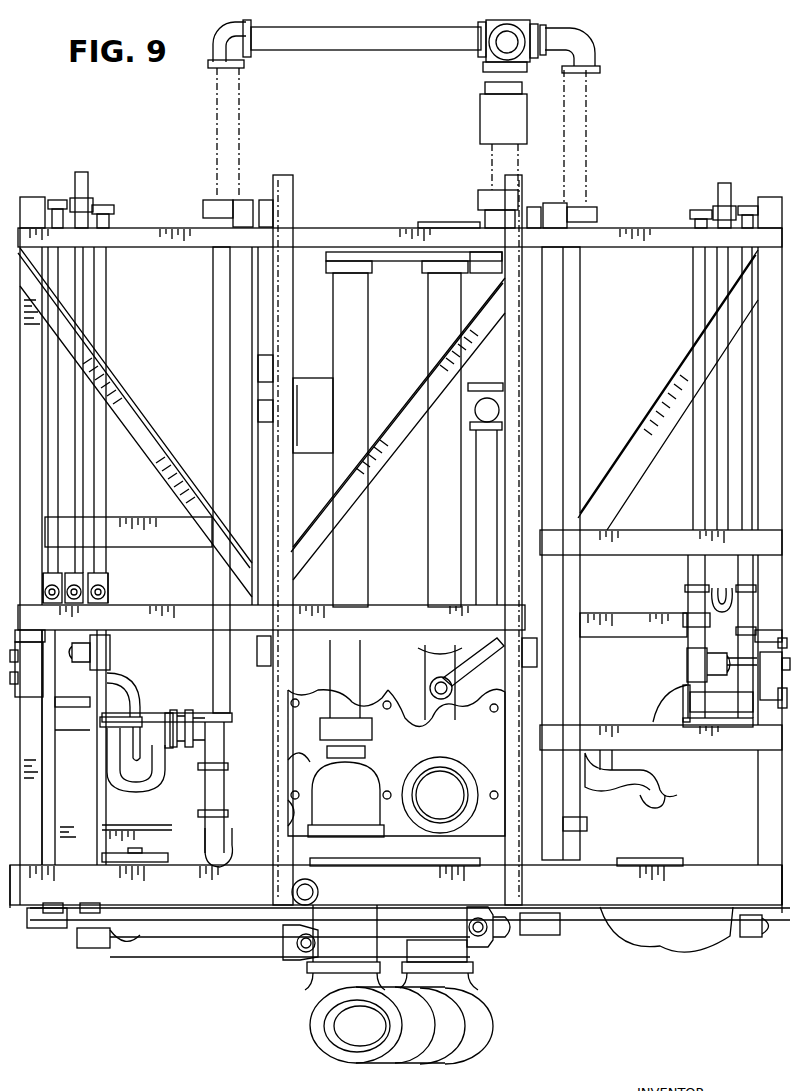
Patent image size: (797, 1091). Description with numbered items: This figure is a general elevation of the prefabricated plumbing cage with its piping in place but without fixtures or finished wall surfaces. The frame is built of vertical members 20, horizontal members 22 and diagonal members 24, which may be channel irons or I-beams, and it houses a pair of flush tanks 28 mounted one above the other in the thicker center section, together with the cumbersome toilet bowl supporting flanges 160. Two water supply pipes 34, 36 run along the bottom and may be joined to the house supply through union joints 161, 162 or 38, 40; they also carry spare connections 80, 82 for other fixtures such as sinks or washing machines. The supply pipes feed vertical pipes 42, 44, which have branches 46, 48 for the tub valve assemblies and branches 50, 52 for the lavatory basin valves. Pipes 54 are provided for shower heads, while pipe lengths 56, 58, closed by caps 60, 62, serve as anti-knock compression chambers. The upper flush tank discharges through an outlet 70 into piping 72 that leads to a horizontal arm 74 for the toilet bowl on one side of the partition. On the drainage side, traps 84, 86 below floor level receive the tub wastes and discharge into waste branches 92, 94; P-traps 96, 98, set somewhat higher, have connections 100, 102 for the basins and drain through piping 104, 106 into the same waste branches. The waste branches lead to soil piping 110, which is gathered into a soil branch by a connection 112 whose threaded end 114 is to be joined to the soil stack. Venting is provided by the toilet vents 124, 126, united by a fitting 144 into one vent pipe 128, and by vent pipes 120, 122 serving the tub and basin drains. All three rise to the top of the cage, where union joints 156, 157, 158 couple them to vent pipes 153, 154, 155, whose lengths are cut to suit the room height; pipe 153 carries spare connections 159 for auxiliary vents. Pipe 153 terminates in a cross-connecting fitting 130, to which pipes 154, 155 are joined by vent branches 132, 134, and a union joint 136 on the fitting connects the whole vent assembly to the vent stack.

The vertical member 20 is at (30, 197).
The horizontal member 22 is at (268, 198).
The diagonal member 24 is at (162, 452).
The flush tank 28 is at (310, 444).
The water supply pipe 34 is at (176, 934).
The water supply pipe 36 is at (210, 925).
The union joint 38 is at (700, 956).
The union joint 40 is at (758, 942).
The vertical pipe 42 is at (95, 780).
The vertical pipe 44 is at (52, 760).
The branch 46 is at (106, 590).
The branch 48 is at (60, 604).
The branch 50 is at (27, 662).
The branch 52 is at (20, 630).
The shower pipe 54 is at (88, 183).
The pipe length 56 is at (106, 457).
The pipe length 58 is at (48, 438).
The cap 60 is at (105, 207).
The cap 62 is at (57, 200).
The outlet 70 is at (470, 414).
The piping 72 is at (474, 480).
The horizontal arm 74 is at (432, 683).
The spare connection 80 is at (70, 950).
The spare connection 82 is at (40, 926).
The trap 84 is at (152, 856).
The trap 86 is at (645, 858).
The waste branch 92 is at (205, 835).
The waste branch 94 is at (588, 829).
The P-trap 96 is at (130, 786).
The P-trap 98 is at (642, 798).
The connection 100 is at (78, 700).
The connection 102 is at (730, 712).
The piping 104 is at (205, 778).
The piping 106 is at (590, 782).
The soil piping 110 is at (388, 858).
The connection 112 is at (325, 1046).
The threaded end 114 is at (366, 1050).
The vent pipe 120 is at (213, 339).
The vent pipe 122 is at (581, 342).
The toilet vent 124 is at (368, 300).
The toilet vent 126 is at (428, 326).
The vent pipe 128 is at (470, 274).
The cross-connecting fitting 130 is at (472, 50).
The vent branch 132 is at (362, 51).
The vent branch 134 is at (582, 48).
The union joint 136 is at (535, 30).
The fitting 144 is at (440, 222).
The vent pipe 153 is at (485, 74).
The vent pipe 154 is at (242, 137).
The vent pipe 155 is at (588, 136).
The union joint 156 is at (480, 195).
The union joint 157 is at (203, 208).
The union joint 158 is at (598, 215).
The spare connection 159 is at (480, 125).
The toilet bowl supporting flange 160 is at (340, 688).
The union joint 161 is at (296, 958).
The union joint 162 is at (492, 950).